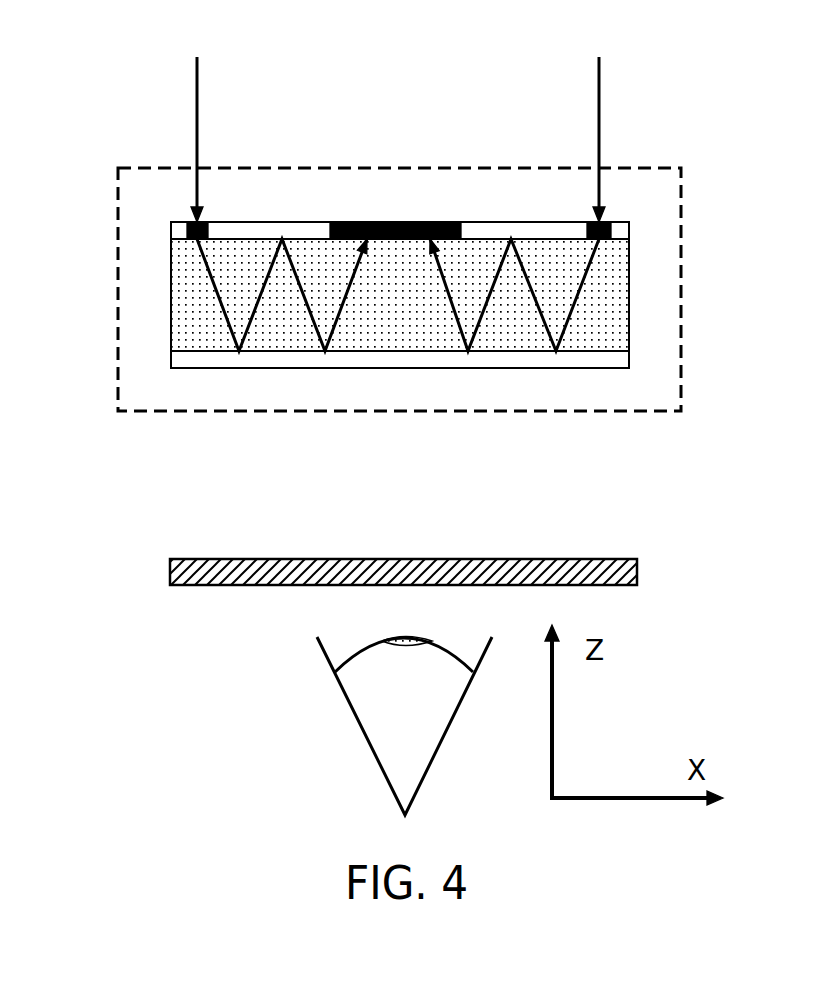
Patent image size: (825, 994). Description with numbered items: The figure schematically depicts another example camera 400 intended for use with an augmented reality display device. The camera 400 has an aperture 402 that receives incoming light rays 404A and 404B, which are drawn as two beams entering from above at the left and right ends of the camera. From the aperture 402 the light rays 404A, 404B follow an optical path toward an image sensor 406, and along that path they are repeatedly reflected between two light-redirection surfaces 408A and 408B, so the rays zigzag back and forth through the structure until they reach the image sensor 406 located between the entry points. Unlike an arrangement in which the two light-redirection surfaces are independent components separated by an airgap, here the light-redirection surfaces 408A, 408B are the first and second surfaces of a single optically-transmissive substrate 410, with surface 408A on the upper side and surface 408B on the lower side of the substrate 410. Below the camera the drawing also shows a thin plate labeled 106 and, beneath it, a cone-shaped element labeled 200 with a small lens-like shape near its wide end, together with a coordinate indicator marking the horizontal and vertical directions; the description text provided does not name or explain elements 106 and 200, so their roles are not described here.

The camera 400 is at (158, 168).
The aperture 402 is at (190, 222).
The light ray 404A is at (197, 135).
The light ray 404B is at (599, 126).
The image sensor 406 is at (392, 222).
The light-redirection surface 408A is at (303, 222).
The light-redirection surface 408B is at (282, 368).
The optically-transmissive substrate 410 is at (171, 297).
The display panel 106 is at (602, 559).
The eye of viewer 200 is at (382, 772).